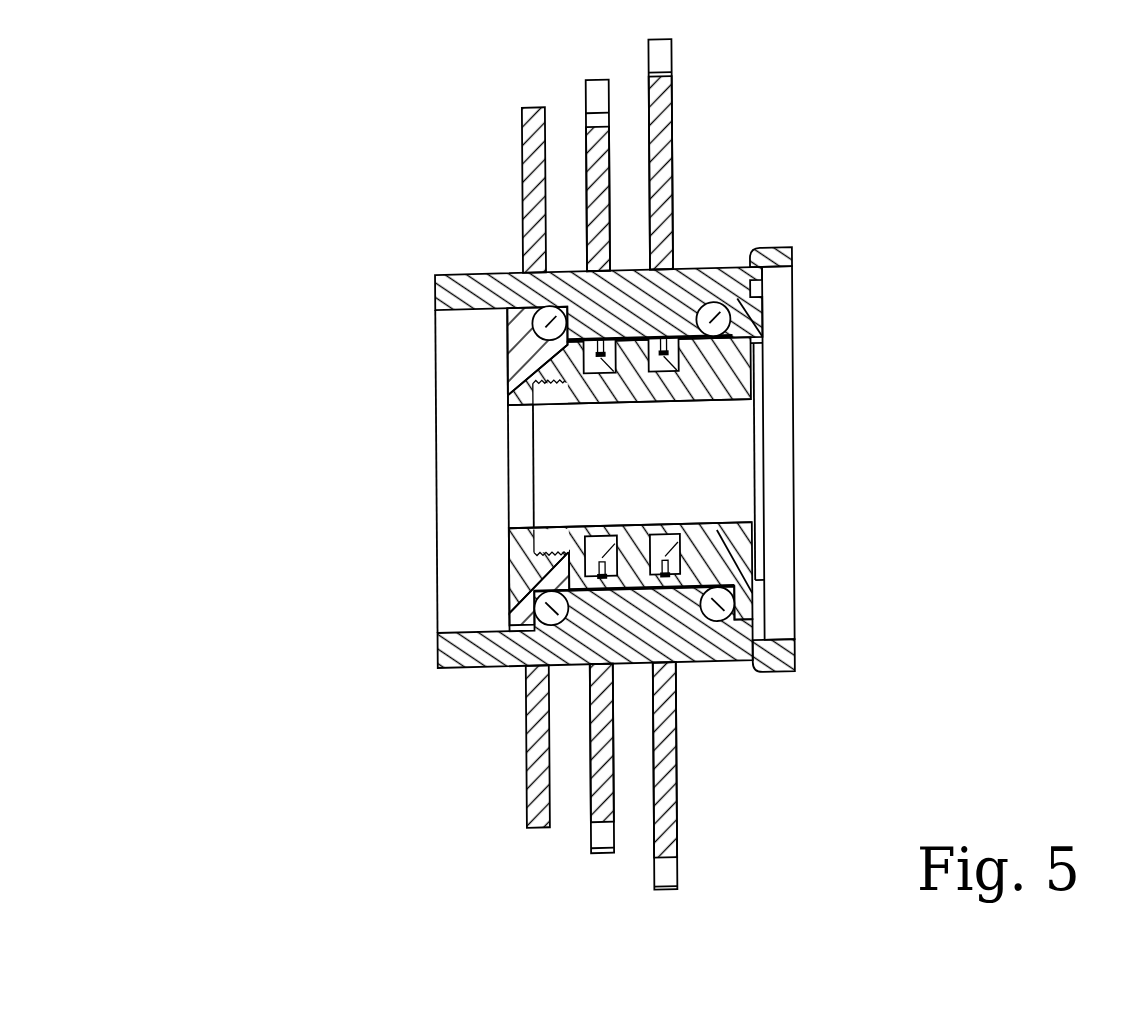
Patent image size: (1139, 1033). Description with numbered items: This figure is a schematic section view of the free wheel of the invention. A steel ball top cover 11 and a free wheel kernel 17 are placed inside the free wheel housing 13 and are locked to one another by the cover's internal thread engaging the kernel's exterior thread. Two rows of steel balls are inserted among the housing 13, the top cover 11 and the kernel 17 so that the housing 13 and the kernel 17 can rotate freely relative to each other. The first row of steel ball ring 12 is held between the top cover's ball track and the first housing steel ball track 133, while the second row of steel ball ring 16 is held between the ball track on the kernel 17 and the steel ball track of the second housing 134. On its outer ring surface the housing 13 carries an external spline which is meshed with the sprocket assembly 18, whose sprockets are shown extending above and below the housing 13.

The steel ball top cover 11 is at (520, 368).
The first row of steel ball ring 12 is at (452, 273).
The free wheel housing 13 is at (482, 647).
The second row of steel ball ring 16 is at (737, 298).
The free wheel kernel 17 is at (753, 323).
The sprocket assembly 18 is at (655, 803).
The first housing steel ball track 133 is at (557, 307).
The steel ball track of the second housing 134 is at (711, 300).